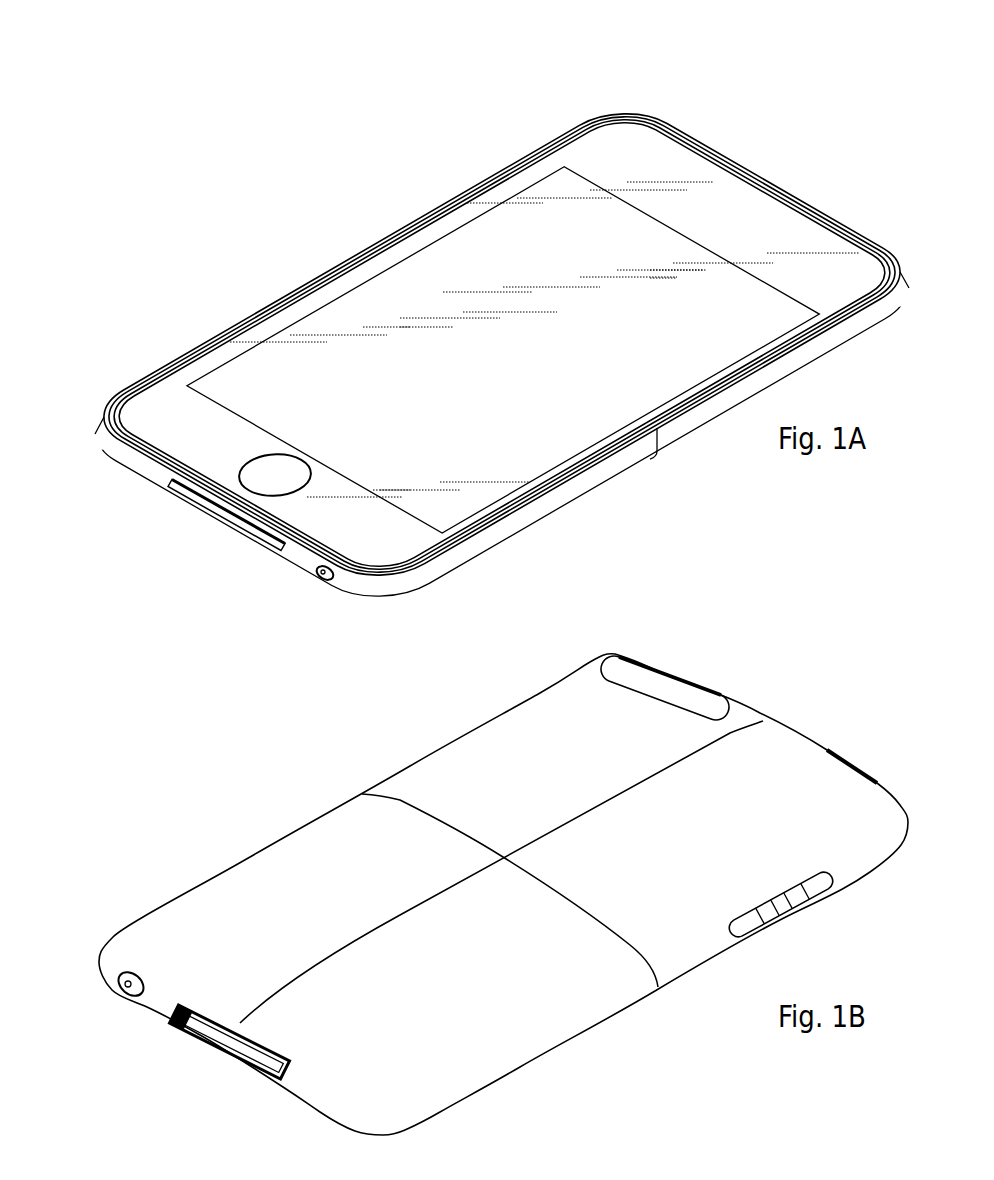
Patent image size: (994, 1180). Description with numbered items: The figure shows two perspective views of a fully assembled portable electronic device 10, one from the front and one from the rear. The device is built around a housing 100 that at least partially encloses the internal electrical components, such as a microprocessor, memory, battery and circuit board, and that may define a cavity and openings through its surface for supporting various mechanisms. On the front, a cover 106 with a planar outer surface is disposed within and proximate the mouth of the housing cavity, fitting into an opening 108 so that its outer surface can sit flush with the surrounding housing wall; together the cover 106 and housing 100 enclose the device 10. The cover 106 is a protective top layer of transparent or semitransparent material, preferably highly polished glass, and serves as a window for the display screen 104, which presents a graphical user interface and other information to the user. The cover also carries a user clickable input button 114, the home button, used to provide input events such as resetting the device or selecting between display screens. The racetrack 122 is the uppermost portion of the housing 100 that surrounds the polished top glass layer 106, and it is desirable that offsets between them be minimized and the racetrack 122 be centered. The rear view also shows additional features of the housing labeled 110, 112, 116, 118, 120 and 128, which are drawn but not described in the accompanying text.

In FIG. 1A, the portable electronic device 10 is at (205, 107).
In FIG. 1A, the housing 100 is at (657, 440).
In FIG. 1B, the housing 100 is at (531, 686).
In FIG. 1A, the display screen 104 is at (665, 221).
In FIG. 1A, the cover 106 is at (405, 276).
In FIG. 1A, the opening 108 is at (630, 145).
In FIG. 1B, the side button 110 is at (845, 768).
In FIG. 1B, the speaker 112 is at (810, 888).
In FIG. 1A, the user clickable input button 114 is at (274, 475).
In FIG. 1A, the audio jack 116 is at (318, 582).
In FIG. 1B, the audio jack 116 is at (107, 998).
In FIG. 1A, the connector port 118 is at (208, 498).
In FIG. 1B, the connector port 118 is at (182, 1049).
In FIG. 1B, the camera window 120 is at (665, 688).
In FIG. 1A, the racetrack 122 is at (205, 346).
In FIG. 1B, the rear housing 128 is at (641, 641).